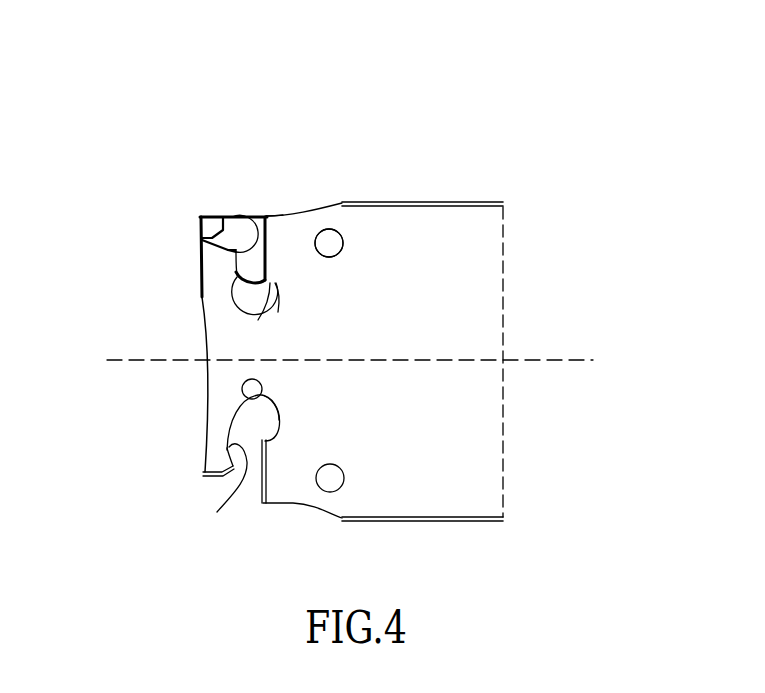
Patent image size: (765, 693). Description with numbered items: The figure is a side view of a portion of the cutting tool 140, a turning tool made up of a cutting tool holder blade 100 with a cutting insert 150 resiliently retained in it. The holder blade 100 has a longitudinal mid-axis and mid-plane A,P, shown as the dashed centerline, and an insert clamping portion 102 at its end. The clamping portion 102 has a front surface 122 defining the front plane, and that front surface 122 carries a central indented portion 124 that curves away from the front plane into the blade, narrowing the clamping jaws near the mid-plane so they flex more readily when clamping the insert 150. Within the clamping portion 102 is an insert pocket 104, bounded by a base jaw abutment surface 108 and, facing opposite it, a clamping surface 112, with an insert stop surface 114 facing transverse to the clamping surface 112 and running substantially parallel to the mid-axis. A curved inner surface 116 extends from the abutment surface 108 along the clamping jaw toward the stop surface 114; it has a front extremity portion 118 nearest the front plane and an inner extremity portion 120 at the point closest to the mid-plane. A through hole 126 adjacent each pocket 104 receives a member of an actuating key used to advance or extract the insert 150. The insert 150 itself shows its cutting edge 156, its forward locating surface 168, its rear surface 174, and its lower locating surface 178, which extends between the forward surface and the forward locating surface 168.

The cutting tool holder blade 100 is at (464, 190).
The insert clamping portion 102 is at (103, 474).
The insert pocket 104 is at (248, 512).
The base jaw abutment surface 108 is at (263, 216).
The clamping surface 112 is at (232, 217).
The insert stop surface 114 is at (204, 237).
The curved inner surface 116 is at (283, 292).
The front extremity portion 118 is at (232, 300).
The inner extremity portion 120 is at (266, 283).
The front surface 122 is at (208, 382).
The central indented portion 124 is at (209, 363).
The through hole 126 is at (350, 256).
The cutting tool 140 is at (196, 90).
The cutting insert 150 is at (207, 200).
The cutting edge 156 is at (203, 213).
The forward locating surface 168 is at (236, 268).
The rear surface 174 is at (283, 215).
The lower locating surface 178 is at (228, 250).
The longitudinal mid-axis and mid-plane A,P is at (568, 358).